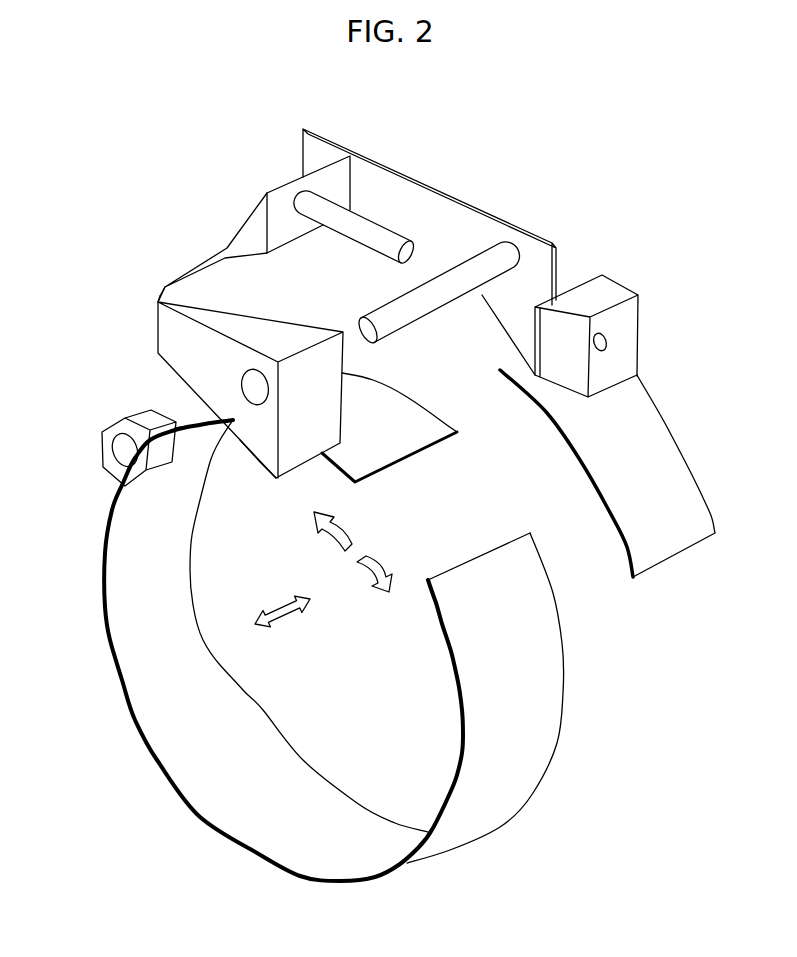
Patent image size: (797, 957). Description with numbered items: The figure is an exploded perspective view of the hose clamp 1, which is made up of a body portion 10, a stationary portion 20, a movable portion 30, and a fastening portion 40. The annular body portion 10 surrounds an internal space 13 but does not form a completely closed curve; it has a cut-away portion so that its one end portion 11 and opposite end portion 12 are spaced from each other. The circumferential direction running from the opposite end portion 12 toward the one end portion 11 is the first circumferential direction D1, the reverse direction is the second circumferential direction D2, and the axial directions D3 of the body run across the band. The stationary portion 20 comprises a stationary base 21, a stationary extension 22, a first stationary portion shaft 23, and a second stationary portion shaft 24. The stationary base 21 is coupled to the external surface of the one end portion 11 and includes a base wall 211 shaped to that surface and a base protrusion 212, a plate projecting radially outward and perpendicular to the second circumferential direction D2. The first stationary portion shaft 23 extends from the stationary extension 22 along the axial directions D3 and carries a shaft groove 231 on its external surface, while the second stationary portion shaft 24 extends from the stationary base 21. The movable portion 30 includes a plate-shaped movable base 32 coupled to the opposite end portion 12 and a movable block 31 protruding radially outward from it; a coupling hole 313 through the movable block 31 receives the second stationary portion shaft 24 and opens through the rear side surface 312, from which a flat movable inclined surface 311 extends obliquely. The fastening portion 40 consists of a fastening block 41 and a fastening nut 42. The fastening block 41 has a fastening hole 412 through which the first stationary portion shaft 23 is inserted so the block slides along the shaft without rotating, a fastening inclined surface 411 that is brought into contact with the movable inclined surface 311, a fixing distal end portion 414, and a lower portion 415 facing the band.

The hose clamp 1 is at (273, 943).
The body portion 10 is at (582, 716).
The one end portion 11 is at (402, 452).
The opposite end portion 12 is at (480, 563).
The internal space 13 is at (351, 737).
The stationary portion 20 is at (443, 147).
The stationary base 21 is at (120, 145).
The base wall 211 is at (187, 265).
The base protrusion 212 is at (237, 237).
The stationary extension 22 is at (365, 157).
The first stationary portion shaft 23 is at (443, 287).
The shaft groove 231 is at (372, 345).
The second stationary portion shaft 24 is at (357, 232).
The movable portion 30 is at (708, 402).
The movable block 31 is at (602, 292).
The movable inclined surface 311 is at (562, 393).
The rear side surface 312 is at (630, 318).
The coupling hole 313 is at (607, 342).
The movable base 32 is at (690, 490).
The fastening portion 40 is at (65, 260).
The fastening block 41 is at (140, 303).
The fastening inclined surface 411 is at (233, 298).
The fastening hole 412 is at (243, 386).
The fixing distal end portion 414 is at (158, 295).
The lower curved face of fastening block 415 is at (247, 447).
The fastening nut 42 is at (105, 390).
The first circumferential direction D1 is at (346, 529).
The second circumferential direction D2 is at (368, 590).
The axial directions D3 is at (293, 618).